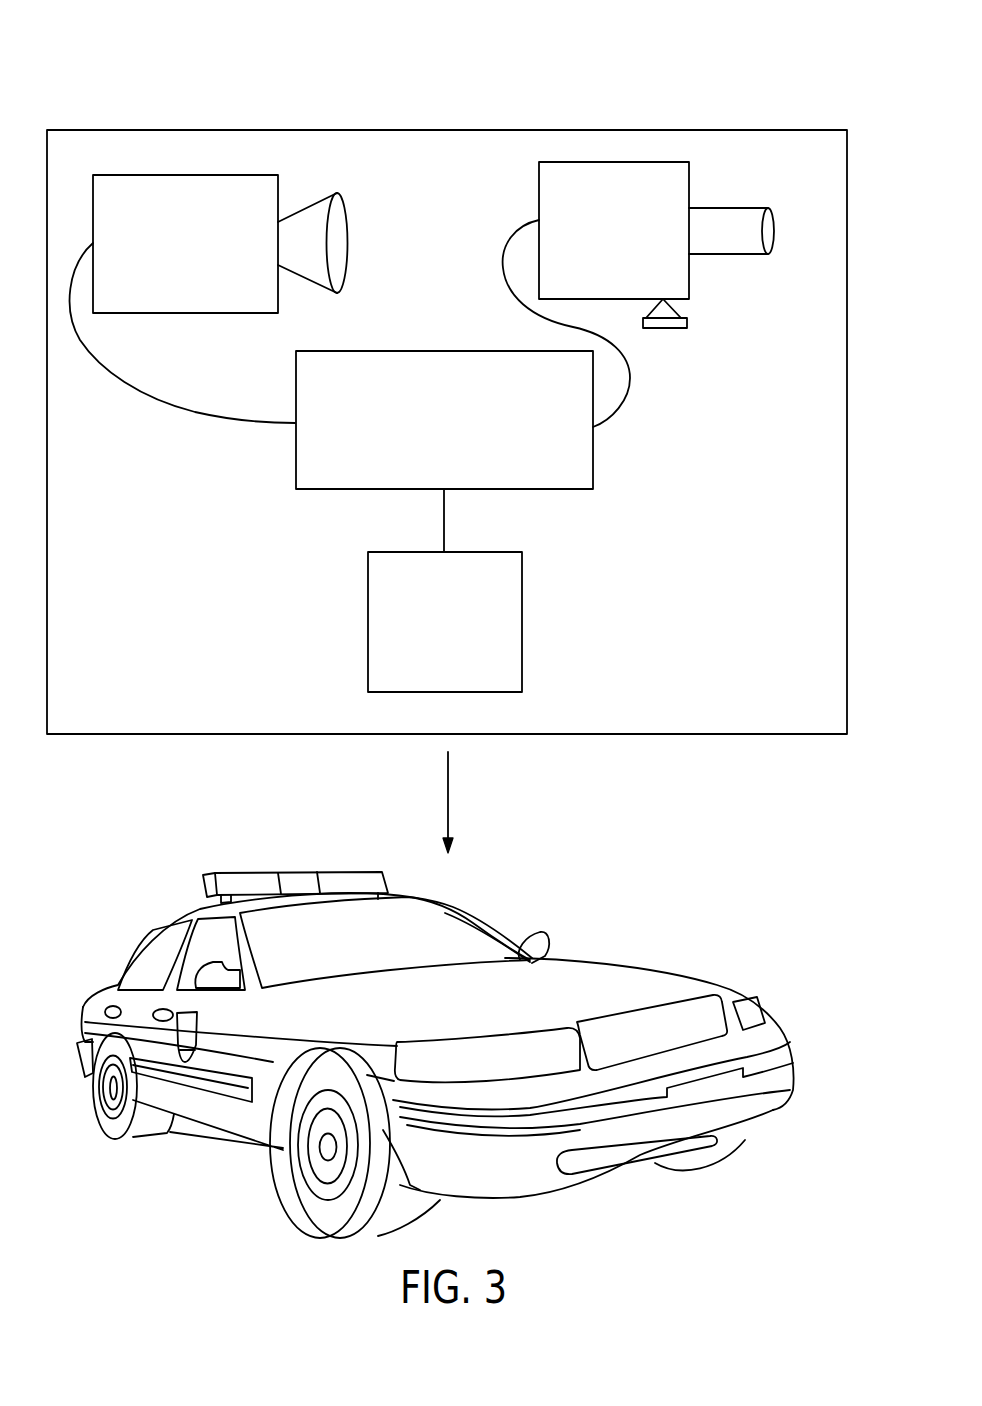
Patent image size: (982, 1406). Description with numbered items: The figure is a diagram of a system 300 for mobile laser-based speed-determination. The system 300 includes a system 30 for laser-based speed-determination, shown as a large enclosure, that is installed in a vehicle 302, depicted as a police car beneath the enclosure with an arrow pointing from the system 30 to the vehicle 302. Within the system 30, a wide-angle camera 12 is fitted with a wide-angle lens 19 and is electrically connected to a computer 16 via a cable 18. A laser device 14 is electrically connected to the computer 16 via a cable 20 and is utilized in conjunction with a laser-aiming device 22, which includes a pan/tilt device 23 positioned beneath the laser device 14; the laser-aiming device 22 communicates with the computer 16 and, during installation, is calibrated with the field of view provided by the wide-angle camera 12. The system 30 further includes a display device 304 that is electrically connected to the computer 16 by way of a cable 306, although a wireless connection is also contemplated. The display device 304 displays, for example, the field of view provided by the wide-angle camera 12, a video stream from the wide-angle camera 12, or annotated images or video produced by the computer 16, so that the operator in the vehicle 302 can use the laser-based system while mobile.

The system for mobile laser-based speed-determination 300 is at (88, 61).
The system for laser-based speed-determination 30 is at (777, 129).
The wide-angle camera 12 is at (198, 254).
The wide-angle lens 19 is at (337, 193).
The laser device 14 is at (625, 237).
The laser-aiming device 22 is at (720, 328).
The pan/tilt device 23 is at (692, 334).
The cable 18 is at (122, 379).
The cable 20 is at (630, 378).
The computer 16 is at (457, 427).
The cable 306 is at (446, 531).
The display device 304 is at (462, 631).
The vehicle 302 is at (654, 968).